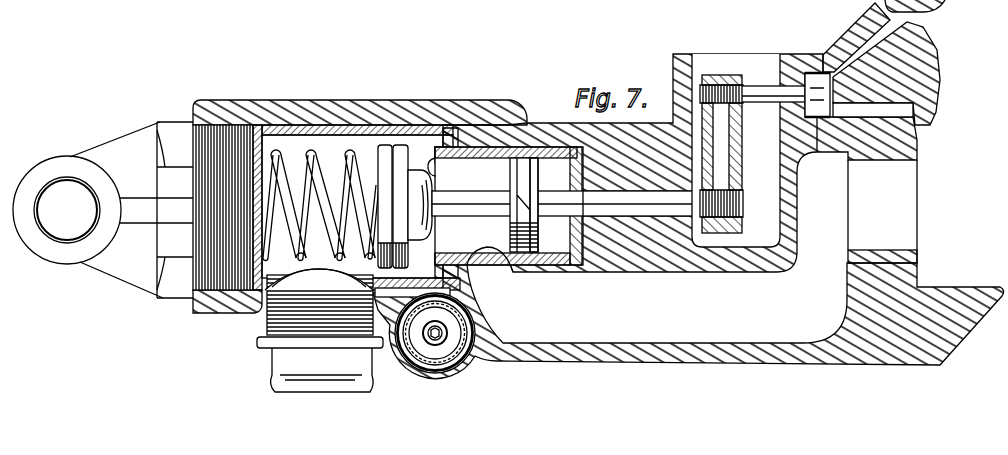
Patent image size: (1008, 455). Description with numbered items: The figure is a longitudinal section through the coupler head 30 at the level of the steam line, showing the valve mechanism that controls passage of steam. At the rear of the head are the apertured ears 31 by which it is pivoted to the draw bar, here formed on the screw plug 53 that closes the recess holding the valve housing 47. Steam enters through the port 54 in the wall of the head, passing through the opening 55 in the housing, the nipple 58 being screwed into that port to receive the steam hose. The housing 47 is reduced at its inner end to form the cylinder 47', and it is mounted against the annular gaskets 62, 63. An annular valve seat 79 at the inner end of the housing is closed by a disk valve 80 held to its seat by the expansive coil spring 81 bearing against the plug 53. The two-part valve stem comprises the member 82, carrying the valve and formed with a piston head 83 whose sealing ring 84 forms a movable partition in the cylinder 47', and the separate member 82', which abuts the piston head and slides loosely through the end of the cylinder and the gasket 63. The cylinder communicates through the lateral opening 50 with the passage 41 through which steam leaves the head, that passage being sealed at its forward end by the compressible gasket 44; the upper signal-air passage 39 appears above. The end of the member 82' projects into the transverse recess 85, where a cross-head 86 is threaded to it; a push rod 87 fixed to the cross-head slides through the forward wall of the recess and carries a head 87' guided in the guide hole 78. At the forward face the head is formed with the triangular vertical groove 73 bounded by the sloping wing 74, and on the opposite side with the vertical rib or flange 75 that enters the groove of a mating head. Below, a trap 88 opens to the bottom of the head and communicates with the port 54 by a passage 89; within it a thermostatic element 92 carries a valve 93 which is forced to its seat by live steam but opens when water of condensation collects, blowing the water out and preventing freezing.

The coupler head 30 is at (357, 108).
The apertured ears 31 is at (57, 172).
The longitudinal passage 39 is at (835, 7).
The longitudinal passage 41 is at (716, 332).
The compressible gasket 44 is at (917, 253).
The valve housing 47 is at (356, 182).
The cylinder 47' is at (509, 184).
The lateral opening 50 is at (504, 271).
The screw plug 53 is at (175, 291).
The port 54 is at (282, 292).
The opening 55 is at (287, 280).
The nipple 58 is at (278, 363).
The gasket 62 is at (463, 128).
The gasket 63 is at (587, 157).
The vertical groove 73 is at (877, 110).
The sloping wing 74 is at (853, 32).
The vertical rib or flange 75 is at (900, 48).
The guide hole 78 is at (822, 70).
The annular valve seat 79 is at (437, 165).
The disk valve 80 is at (402, 148).
The expansive coil spring 81 is at (316, 172).
The valve stem member 82 is at (567, 218).
The valve stem member 82' is at (643, 245).
The piston head 83 is at (510, 230).
The sealing ring 84 is at (528, 228).
The transverse recess 85 is at (768, 63).
The cross-head 86 is at (737, 170).
The push rod 87 is at (773, 109).
The head 87' is at (814, 149).
The trap 88 is at (458, 303).
The passage 89 is at (405, 292).
The thermostatic element 92 is at (450, 322).
The valve 93 is at (445, 340).